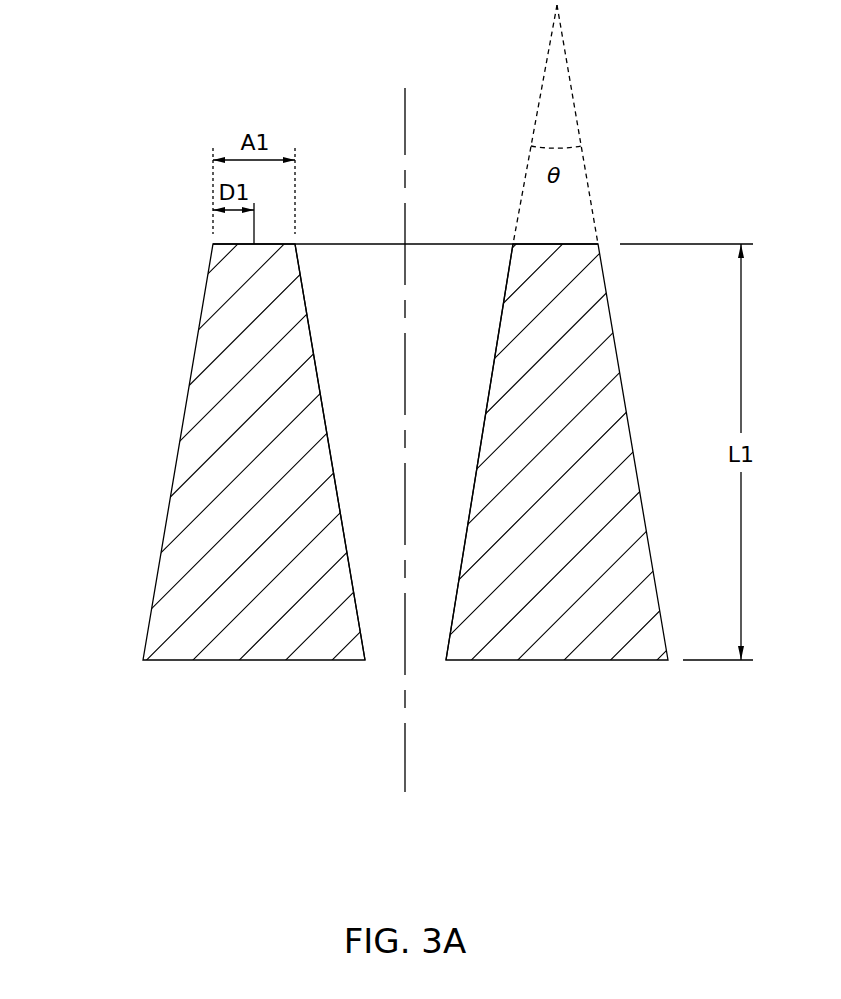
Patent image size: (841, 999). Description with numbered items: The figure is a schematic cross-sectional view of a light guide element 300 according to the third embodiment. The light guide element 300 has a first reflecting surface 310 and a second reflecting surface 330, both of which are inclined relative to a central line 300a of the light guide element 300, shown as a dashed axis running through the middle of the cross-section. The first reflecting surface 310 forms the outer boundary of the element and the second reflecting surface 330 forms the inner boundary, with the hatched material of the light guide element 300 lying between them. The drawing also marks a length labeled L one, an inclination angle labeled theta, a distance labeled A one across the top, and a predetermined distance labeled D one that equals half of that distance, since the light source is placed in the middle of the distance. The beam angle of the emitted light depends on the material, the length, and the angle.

The light guide element 300 is at (420, 422).
The central line 300a is at (404, 113).
The first reflecting surface 310 is at (167, 510).
The second reflecting surface 330 is at (314, 363).